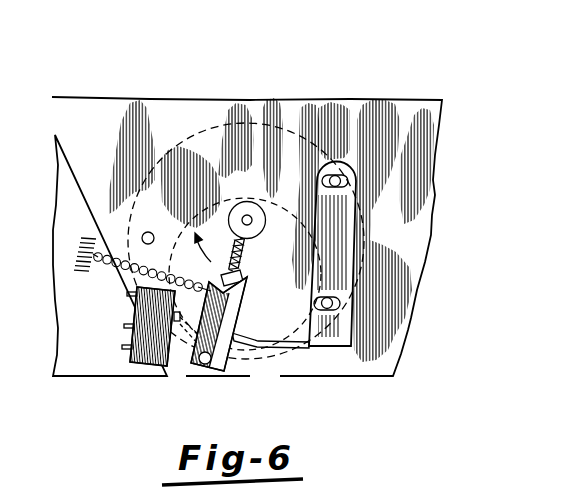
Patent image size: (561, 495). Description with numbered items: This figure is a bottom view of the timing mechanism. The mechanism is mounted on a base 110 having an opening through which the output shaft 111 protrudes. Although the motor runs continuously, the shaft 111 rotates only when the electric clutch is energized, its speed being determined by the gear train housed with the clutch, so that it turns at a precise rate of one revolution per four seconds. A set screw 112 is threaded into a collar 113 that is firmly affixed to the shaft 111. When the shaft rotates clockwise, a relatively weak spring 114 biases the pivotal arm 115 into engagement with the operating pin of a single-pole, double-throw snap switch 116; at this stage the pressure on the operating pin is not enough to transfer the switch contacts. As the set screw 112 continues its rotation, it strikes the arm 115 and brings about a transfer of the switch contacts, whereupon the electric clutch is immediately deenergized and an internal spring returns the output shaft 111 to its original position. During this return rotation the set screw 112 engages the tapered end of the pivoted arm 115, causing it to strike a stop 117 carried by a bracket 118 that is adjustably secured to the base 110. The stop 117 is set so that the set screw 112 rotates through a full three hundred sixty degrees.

The base 110 is at (440, 120).
The output shaft 111 is at (250, 217).
The set screw 112 is at (245, 255).
The collar 113 is at (229, 212).
The spring 114 is at (118, 267).
The pivotal arm 115 is at (198, 366).
The snap switch 116 is at (137, 339).
The stop 117 is at (270, 348).
The bracket 118 is at (348, 242).